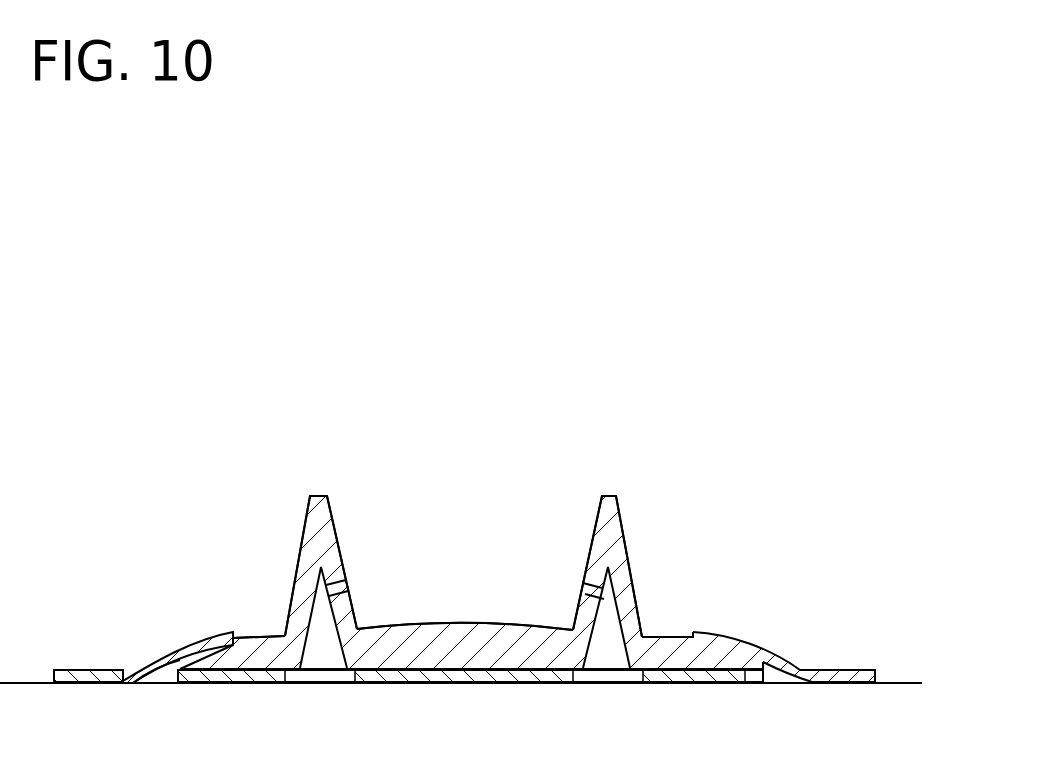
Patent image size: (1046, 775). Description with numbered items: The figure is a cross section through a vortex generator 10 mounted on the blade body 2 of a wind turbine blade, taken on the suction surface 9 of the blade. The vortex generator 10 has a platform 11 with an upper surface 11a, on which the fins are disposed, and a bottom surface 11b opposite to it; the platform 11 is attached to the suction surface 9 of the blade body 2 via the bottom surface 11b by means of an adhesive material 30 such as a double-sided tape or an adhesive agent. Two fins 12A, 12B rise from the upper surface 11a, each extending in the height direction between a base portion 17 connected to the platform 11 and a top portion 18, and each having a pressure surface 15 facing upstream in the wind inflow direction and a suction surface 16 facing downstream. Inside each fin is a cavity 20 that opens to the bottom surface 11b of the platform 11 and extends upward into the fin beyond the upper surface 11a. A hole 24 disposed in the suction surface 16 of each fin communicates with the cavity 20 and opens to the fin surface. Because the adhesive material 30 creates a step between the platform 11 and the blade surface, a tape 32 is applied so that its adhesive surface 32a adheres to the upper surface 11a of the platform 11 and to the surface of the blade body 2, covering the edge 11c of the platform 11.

The vortex generator 10 is at (752, 289).
The blade body 2 is at (897, 693).
The suction surface 9 is at (882, 680).
The adhesive material 30 is at (412, 674).
The platform 11 is at (428, 632).
The upper surface 11a is at (493, 634).
The bottom surface 11b is at (498, 672).
The edge 11c is at (772, 665).
The fin 12A is at (305, 515).
The fin 12B is at (615, 527).
The pressure surface 15 is at (297, 566).
The suction surface 16 is at (343, 548).
The base portion 17 is at (285, 634).
The top portion 18 is at (318, 494).
The cavity 20 is at (315, 622).
The hole 24 is at (350, 587).
The tape 32 is at (146, 660).
The adhesive surface 32a is at (157, 677).